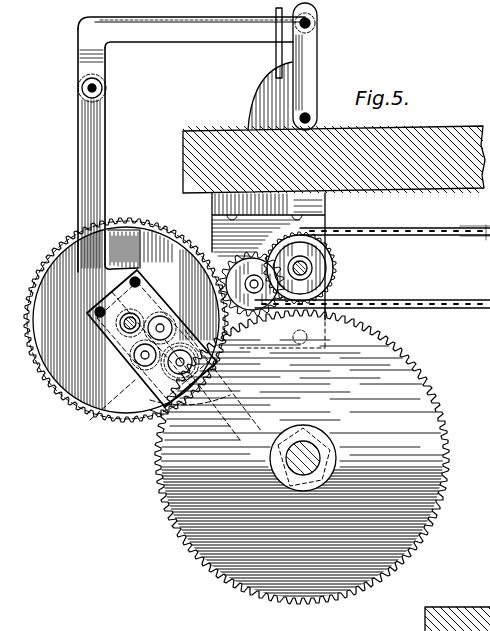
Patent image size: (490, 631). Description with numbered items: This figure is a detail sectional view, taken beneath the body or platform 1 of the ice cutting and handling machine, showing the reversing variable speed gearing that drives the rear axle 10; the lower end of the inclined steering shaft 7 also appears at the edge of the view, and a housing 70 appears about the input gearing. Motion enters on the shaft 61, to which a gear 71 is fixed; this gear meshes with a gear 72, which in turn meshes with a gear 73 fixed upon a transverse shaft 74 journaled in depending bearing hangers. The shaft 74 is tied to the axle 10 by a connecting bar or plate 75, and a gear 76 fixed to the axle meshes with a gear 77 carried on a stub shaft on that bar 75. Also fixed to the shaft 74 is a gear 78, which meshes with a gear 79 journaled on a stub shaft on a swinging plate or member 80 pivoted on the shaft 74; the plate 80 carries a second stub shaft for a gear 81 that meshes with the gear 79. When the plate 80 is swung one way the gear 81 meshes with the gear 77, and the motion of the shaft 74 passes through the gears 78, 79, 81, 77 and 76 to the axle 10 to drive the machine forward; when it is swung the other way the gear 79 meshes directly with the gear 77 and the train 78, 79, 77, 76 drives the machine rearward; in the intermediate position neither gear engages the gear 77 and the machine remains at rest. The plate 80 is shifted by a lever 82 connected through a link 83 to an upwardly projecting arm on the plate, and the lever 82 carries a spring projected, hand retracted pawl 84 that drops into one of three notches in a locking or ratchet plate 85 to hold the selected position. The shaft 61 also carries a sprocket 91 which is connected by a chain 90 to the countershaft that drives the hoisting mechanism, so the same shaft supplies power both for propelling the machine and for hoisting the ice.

The body or platform 1 is at (444, 185).
The inclined shaft 7 is at (484, 218).
The rear axle 10 is at (316, 453).
The shaft 61 is at (328, 238).
The gear housing 70 is at (212, 212).
The gear 71 is at (336, 268).
The gear 72 is at (282, 338).
The gear 73 is at (120, 408).
The transverse shaft 74 is at (58, 386).
The connecting bar or plate 75 is at (225, 422).
The gear 76 is at (410, 375).
The gear 77 is at (158, 420).
The gear 78 is at (39, 272).
The gear 79 is at (170, 290).
The swinging plate or member 80 is at (148, 262).
The gear 81 is at (90, 420).
The lever 82 is at (318, 48).
The link 83 is at (183, 32).
The pawl 84 is at (292, 64).
The locking or ratchet plate 85 is at (256, 110).
The chain 90 is at (455, 232).
The sprocket 91 is at (338, 296).